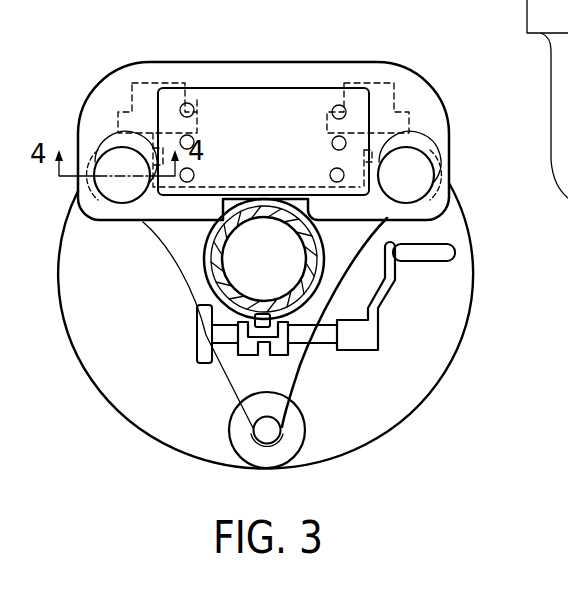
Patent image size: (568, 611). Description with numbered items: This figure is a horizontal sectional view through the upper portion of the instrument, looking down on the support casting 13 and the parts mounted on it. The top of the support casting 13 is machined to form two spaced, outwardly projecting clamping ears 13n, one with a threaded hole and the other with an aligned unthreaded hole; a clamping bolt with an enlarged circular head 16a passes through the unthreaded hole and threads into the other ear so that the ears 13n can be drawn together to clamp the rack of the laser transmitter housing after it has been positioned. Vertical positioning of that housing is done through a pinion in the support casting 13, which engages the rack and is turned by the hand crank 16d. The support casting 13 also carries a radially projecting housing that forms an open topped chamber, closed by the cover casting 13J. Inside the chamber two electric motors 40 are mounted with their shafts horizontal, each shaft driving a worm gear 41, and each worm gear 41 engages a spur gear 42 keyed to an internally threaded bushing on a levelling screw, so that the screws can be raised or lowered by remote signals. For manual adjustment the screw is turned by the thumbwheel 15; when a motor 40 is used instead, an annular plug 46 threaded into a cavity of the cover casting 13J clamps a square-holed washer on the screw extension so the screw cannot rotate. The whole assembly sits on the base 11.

The base 11 is at (423, 360).
The support casting 13 is at (183, 232).
The cover casting 13J is at (372, 72).
The clamping ears 13n is at (288, 352).
The thumbwheel 15 is at (307, 430).
The enlarged circular head 16a is at (203, 343).
The hand crank 16d is at (457, 250).
The electric motors 40 is at (339, 103).
The worm gear 41 is at (263, 141).
The spur gear 42 is at (95, 215).
The annular plug 46 is at (113, 183).